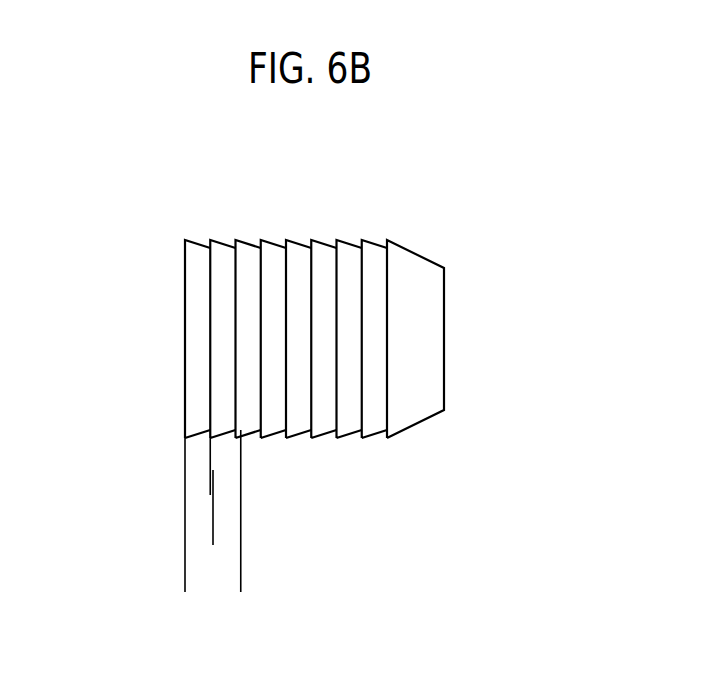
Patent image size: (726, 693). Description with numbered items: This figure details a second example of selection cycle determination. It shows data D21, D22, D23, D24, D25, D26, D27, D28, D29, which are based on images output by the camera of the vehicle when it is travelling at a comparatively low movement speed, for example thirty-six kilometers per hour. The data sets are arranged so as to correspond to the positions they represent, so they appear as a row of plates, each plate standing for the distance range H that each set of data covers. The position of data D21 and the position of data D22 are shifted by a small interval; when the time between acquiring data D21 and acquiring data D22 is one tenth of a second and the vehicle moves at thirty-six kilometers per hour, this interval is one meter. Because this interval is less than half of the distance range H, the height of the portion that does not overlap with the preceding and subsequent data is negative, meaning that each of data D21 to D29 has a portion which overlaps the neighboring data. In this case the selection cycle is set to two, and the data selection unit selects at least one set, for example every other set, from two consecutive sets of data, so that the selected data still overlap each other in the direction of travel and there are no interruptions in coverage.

The data D21 is at (194, 242).
The data D22 is at (219, 242).
The data D23 is at (245, 242).
The data D24 is at (271, 242).
The data D25 is at (295, 242).
The data D26 is at (321, 242).
The data D27 is at (346, 242).
The data D28 is at (371, 242).
The data D29 is at (400, 246).
The distance range H is at (232, 588).